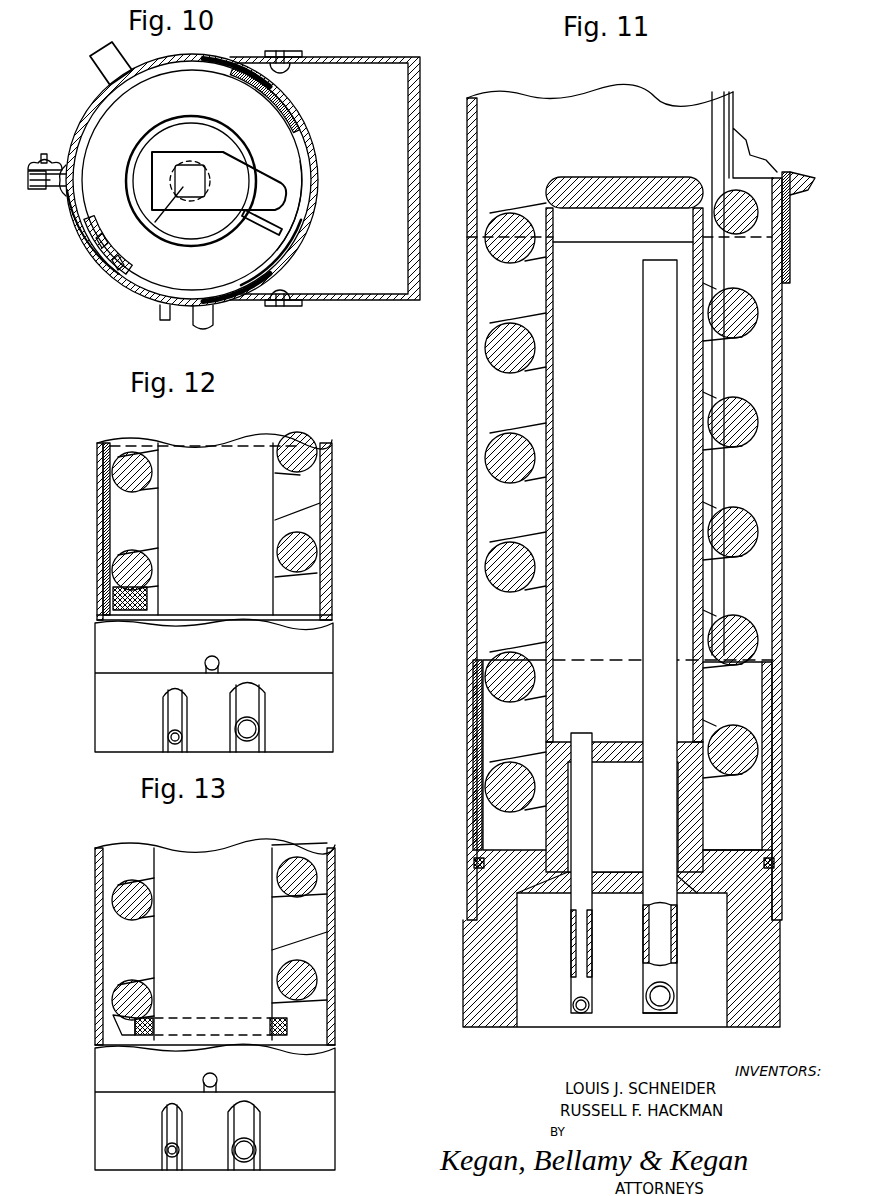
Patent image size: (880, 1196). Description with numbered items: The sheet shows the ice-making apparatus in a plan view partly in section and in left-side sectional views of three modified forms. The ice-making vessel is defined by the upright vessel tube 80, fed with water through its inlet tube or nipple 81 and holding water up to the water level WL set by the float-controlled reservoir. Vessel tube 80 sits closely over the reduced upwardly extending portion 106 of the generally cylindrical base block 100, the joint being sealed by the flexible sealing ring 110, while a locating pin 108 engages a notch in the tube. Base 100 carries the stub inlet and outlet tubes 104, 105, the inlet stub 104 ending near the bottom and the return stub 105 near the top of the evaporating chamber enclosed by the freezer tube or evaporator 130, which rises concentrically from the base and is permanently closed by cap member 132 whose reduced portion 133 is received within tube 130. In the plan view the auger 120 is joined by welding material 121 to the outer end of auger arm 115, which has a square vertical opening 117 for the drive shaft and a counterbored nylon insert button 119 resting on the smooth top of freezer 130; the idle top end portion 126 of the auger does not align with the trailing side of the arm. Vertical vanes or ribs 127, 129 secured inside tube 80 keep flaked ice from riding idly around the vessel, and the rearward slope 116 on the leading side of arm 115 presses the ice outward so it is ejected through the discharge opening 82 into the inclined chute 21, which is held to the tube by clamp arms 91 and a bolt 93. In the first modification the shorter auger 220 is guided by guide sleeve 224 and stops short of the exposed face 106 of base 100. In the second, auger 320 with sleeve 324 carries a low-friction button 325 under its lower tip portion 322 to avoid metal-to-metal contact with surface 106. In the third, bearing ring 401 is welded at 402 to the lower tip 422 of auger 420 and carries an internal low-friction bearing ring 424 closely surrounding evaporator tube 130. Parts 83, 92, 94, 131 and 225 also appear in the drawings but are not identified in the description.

In FIG. 10, the chute 21 is at (402, 280).
In FIG. 11, the chute 21 is at (792, 200).
In FIG. 10, the vessel tube 80 is at (97, 246).
In FIG. 11, the vessel tube 80 is at (470, 752).
In FIG. 12, the vessel tube 80 is at (100, 490).
In FIG. 13, the vessel tube 80 is at (95, 915).
In FIG. 10, the inlet tube 81 is at (100, 70).
In FIG. 10, the discharge opening 82 is at (304, 216).
In FIG. 11, the discharge opening 82 is at (766, 170).
In FIG. 10, the band 83 is at (278, 288).
In FIG. 10, the clamp arms 91 is at (232, 62).
In FIG. 10, the bolt 92 is at (283, 52).
In FIG. 10, the bolt 93 is at (38, 190).
In FIG. 10, the wing nut 94 is at (34, 162).
In FIG. 11, the base block 100 is at (478, 962).
In FIG. 12, the base block 100 is at (95, 730).
In FIG. 13, the base block 100 is at (95, 1158).
In FIG. 11, the stub inlet tube 104 is at (576, 912).
In FIG. 12, the stub inlet tube 104 is at (165, 718).
In FIG. 13, the stub inlet tube 104 is at (165, 1135).
In FIG. 11, the stub outlet tube 105 is at (676, 936).
In FIG. 12, the stub outlet tube 105 is at (255, 712).
In FIG. 13, the stub outlet tube 105 is at (250, 1130).
In FIG. 11, the reduced upwardly extending portion 106 is at (736, 850).
In FIG. 12, the reduced upwardly extending portion 106 is at (312, 612).
In FIG. 13, the reduced upwardly extending portion 106 is at (310, 1040).
In FIG. 12, the locating pin 108 is at (221, 661).
In FIG. 13, the locating pin 108 is at (203, 1078).
In FIG. 11, the sealing ring 110 is at (474, 862).
In FIG. 10, the auger arm 115 is at (176, 181).
In FIG. 10, the rearward slope 116 is at (262, 174).
In FIG. 10, the square vertical opening 117 is at (182, 185).
In FIG. 10, the insert button 119 is at (150, 228).
In FIG. 10, the auger 120 is at (175, 88).
In FIG. 10, the welding material 121 is at (280, 178).
In FIG. 10, the top end portion 126 is at (262, 226).
In FIG. 10, the vane 127 is at (280, 112).
In FIG. 10, the vane 129 is at (118, 264).
In FIG. 10, the freezer tube 130 is at (160, 145).
In FIG. 11, the freezer tube 130 is at (546, 620).
In FIG. 12, the freezer tube 130 is at (320, 505).
In FIG. 13, the freezer tube 130 is at (272, 922).
In FIG. 11, the drum bottom 131 is at (618, 706).
In FIG. 11, the cap member 132 is at (621, 176).
In FIG. 11, the reduced portion 133 is at (604, 240).
In FIG. 11, the auger 220 is at (762, 638).
In FIG. 11, the guide sleeve 224 is at (483, 720).
In FIG. 11, the spring coil 225 is at (500, 788).
In FIG. 12, the auger 320 is at (332, 438).
In FIG. 12, the auger tip 322 is at (120, 572).
In FIG. 12, the sleeve 324 is at (148, 445).
In FIG. 12, the low-friction button 325 is at (113, 603).
In FIG. 13, the bearing ring 401 is at (290, 1028).
In FIG. 13, the weld 402 is at (113, 1028).
In FIG. 13, the auger 420 is at (300, 975).
In FIG. 13, the lower tip 422 is at (120, 1003).
In FIG. 13, the low-friction bearing ring 424 is at (288, 1020).
In FIG. 11, the water level WL is at (478, 237).